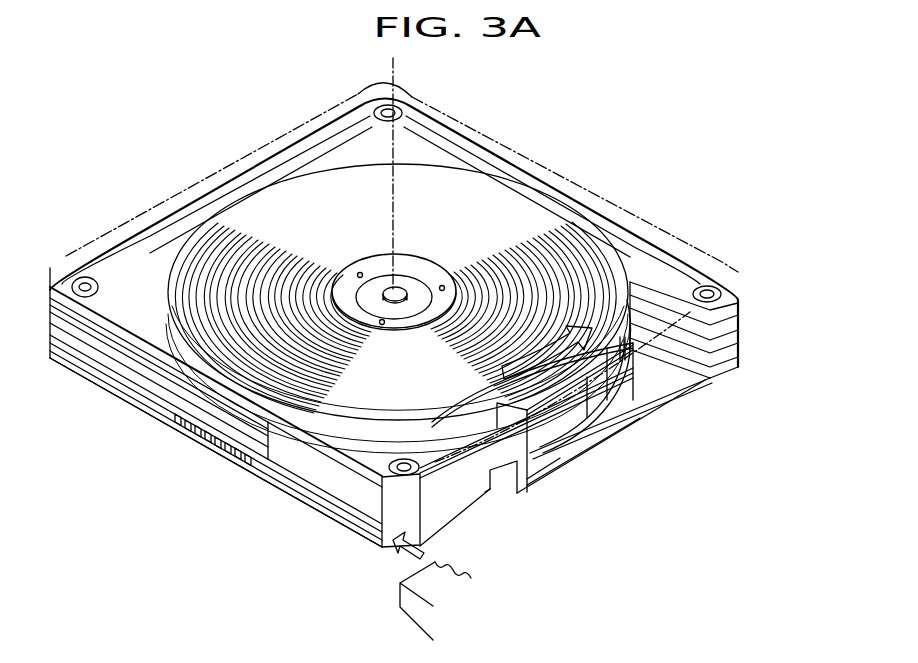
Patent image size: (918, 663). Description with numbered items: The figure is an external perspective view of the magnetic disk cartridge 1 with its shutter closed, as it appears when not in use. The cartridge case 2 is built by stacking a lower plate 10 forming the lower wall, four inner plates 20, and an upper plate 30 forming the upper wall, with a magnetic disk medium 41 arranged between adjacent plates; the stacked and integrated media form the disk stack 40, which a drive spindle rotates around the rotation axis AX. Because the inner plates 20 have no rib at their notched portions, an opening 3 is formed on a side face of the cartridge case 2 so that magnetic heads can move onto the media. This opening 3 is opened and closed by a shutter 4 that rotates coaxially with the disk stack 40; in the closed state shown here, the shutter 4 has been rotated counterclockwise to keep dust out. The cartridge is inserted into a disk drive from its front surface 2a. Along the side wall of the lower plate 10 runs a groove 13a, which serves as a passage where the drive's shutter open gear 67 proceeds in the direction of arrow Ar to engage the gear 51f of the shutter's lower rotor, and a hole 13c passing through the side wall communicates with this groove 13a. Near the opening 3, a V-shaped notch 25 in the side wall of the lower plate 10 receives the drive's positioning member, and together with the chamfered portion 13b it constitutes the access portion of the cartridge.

The magnetic disk cartridge 1 is at (505, 107).
The cartridge case 2 is at (535, 154).
The front surface 2a is at (481, 500).
The opening 3 is at (664, 383).
The shutter 4 is at (553, 427).
The lower plate 10 is at (740, 374).
The groove 13a is at (345, 518).
The chamfered portion 13b is at (413, 512).
The hole 13c is at (303, 493).
The inner plates 20 is at (743, 305).
The notch 25 is at (503, 488).
The upper plate 30 is at (722, 262).
The disk stack 40 is at (426, 304).
The magnetic disk medium 41 is at (510, 217).
The gear 51f is at (206, 448).
The shutter open gear 67 is at (413, 611).
The rotation axis AX is at (393, 62).
The arrow Ar is at (398, 561).